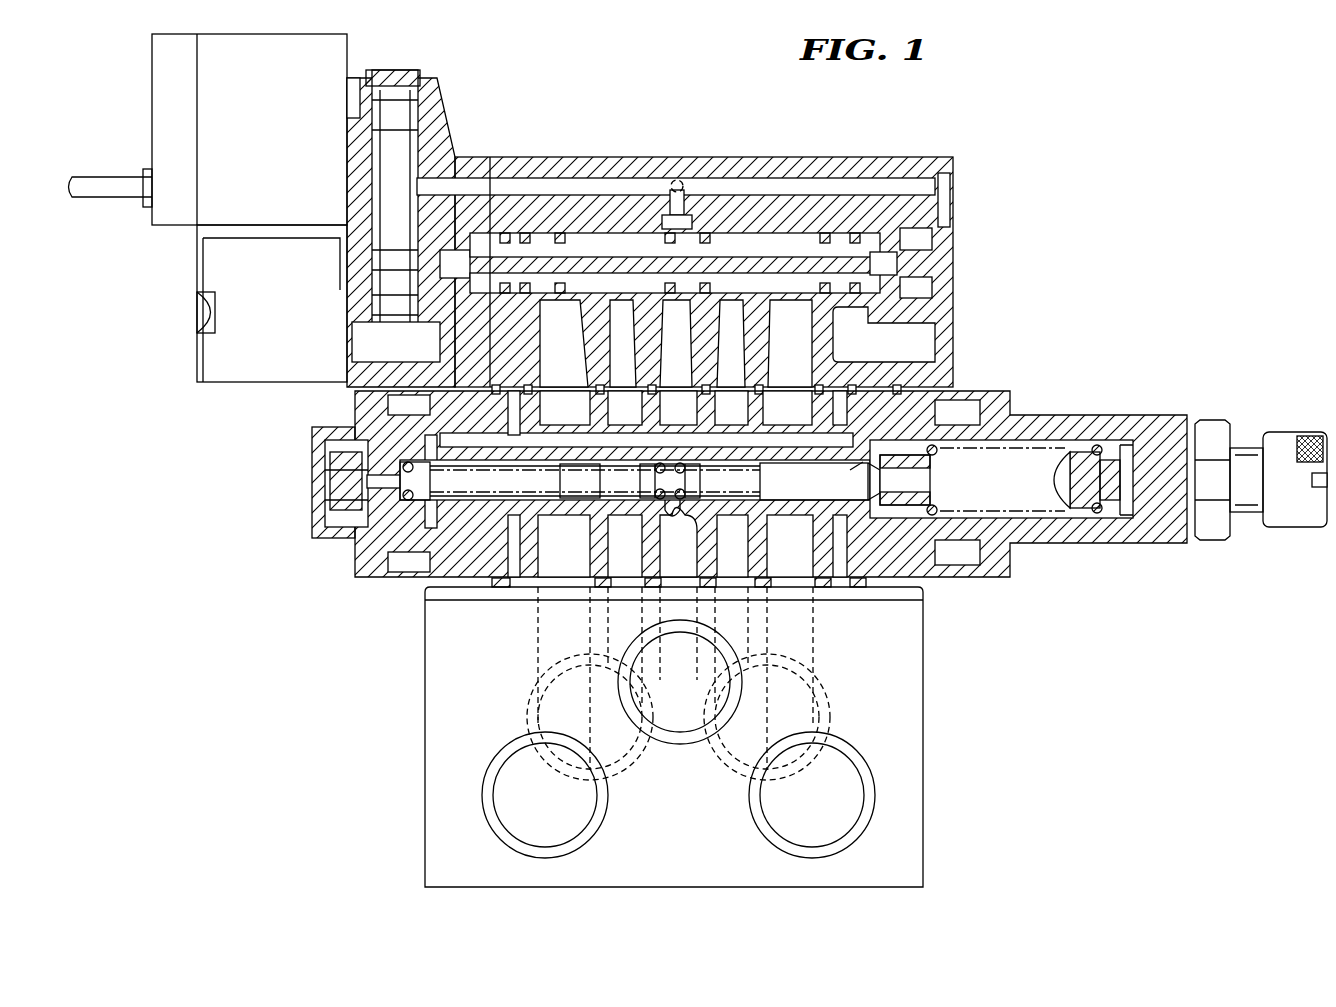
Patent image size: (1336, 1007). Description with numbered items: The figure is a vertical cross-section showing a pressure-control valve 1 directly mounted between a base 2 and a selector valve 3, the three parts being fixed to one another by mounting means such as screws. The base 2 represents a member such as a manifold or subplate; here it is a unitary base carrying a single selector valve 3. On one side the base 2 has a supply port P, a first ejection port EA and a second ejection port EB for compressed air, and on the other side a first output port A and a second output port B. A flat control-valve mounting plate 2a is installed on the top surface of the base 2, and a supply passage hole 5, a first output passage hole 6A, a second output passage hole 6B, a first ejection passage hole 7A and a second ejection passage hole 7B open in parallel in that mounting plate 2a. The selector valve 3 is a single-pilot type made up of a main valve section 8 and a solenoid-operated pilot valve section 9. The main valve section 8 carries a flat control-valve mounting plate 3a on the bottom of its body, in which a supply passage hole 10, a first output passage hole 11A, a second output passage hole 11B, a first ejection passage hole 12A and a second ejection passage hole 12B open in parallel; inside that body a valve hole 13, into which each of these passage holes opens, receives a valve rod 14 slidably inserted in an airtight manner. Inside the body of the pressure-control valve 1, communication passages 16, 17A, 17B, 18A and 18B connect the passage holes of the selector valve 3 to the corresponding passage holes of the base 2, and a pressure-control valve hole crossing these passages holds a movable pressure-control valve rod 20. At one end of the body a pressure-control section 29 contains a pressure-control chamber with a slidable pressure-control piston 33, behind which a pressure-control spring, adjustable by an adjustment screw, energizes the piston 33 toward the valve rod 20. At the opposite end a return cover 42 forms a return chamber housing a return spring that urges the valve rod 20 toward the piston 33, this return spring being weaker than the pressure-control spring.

The pressure-control valve 1 is at (813, 387).
The base 2 is at (708, 732).
The control-valve mounting plate 2a is at (468, 591).
The selector valve 3 is at (650, 225).
The control-valve mounting plate 3a is at (466, 392).
The supply passage hole 5 is at (680, 613).
The first output passage hole 6A is at (600, 603).
The second output passage hole 6B is at (760, 603).
The first ejection passage hole 7A is at (540, 603).
The second ejection passage hole 7B is at (818, 603).
The main valve section 8 is at (762, 157).
The solenoid-operated pilot valve section 9 is at (348, 58).
The supply passage hole 10 is at (690, 375).
The first output passage hole 11A is at (565, 407).
The second output passage hole 11B is at (787, 407).
The first ejection passage hole 12A is at (582, 373).
The second ejection passage hole 12B is at (810, 373).
The valve hole 13 is at (597, 232).
The valve rod 14 is at (808, 232).
The communication passage 16 is at (688, 568).
The communication passage 17A is at (628, 562).
The communication passage 17B is at (741, 528).
The communication passage 18A is at (582, 568).
The communication passage 18B is at (810, 568).
The pressure-control valve rod 20 is at (813, 531).
The pressure-control section 29 is at (1176, 415).
The pressure-control piston 33 is at (965, 467).
The return cover 42 is at (357, 550).
The supply port P is at (688, 705).
The first output port A is at (612, 742).
The second output port B is at (754, 742).
The first ejection port EA is at (559, 813).
The second ejection port EB is at (824, 813).